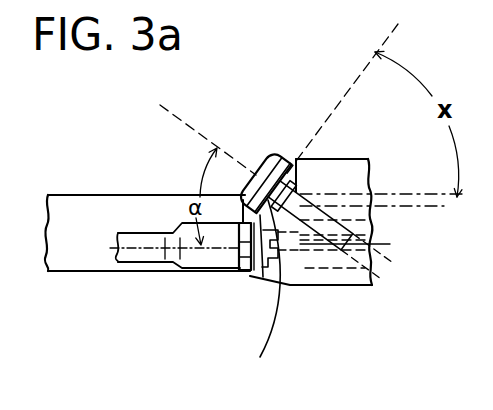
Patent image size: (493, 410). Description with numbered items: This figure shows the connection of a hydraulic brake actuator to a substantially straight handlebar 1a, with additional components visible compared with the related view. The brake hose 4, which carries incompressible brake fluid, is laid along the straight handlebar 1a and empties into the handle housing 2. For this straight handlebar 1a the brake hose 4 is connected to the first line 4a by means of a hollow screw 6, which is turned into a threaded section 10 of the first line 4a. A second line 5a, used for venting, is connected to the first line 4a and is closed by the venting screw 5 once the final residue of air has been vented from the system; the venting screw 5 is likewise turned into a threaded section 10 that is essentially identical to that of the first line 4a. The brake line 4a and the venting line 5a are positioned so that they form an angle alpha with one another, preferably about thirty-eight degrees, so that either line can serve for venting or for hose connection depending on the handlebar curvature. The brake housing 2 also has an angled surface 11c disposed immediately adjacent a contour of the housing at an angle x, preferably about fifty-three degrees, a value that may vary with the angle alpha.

The straight handlebar 1a is at (68, 250).
The handle housing 2 is at (312, 158).
The brake hose 4 is at (130, 255).
The first line 4a is at (290, 243).
The venting screw 5 is at (258, 166).
The second line 5a is at (316, 210).
The hollow screw 6 is at (246, 273).
The threaded section 10 is at (262, 270).
The angled surface 11c is at (258, 297).